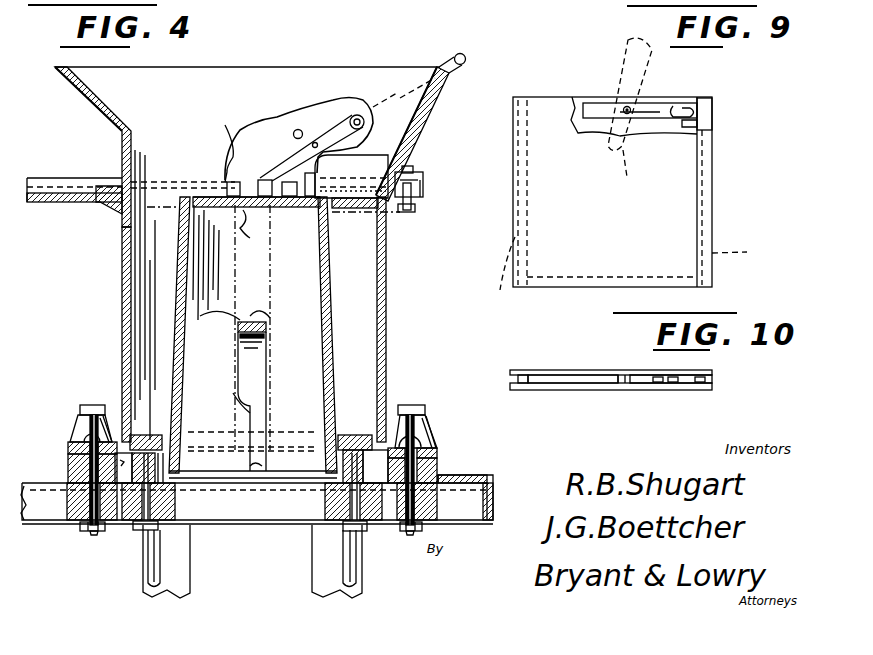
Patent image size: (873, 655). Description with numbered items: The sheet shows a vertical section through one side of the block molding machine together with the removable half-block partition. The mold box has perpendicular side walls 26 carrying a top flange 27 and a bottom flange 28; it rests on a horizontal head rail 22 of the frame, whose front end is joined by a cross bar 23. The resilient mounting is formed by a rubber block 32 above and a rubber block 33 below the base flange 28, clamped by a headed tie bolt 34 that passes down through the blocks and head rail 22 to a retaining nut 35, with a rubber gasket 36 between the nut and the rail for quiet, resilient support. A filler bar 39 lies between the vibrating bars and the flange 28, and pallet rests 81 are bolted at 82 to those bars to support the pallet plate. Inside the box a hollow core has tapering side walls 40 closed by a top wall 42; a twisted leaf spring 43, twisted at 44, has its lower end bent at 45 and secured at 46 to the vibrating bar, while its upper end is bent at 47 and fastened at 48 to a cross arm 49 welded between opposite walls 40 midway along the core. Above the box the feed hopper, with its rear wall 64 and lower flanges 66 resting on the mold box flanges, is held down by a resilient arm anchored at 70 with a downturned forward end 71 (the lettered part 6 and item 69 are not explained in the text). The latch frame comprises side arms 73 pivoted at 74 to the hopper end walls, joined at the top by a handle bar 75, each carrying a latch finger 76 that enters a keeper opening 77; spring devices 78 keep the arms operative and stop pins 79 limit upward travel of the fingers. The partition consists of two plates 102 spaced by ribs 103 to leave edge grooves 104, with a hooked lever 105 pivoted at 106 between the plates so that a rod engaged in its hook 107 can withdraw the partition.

In FIG. 4, the hopper side wall 6 is at (425, 112).
In FIG. 4, the head rail 22 is at (447, 513).
In FIG. 4, the cross bar 23 is at (485, 482).
In FIG. 4, the side wall 26 is at (121, 295).
In FIG. 4, the top flange 27 is at (103, 210).
In FIG. 4, the bottom flange 28 is at (77, 443).
In FIG. 4, the rubber block 32 is at (77, 425).
In FIG. 4, the rubber block 33 is at (68, 457).
In FIG. 4, the tie bolt 34 is at (90, 405).
In FIG. 4, the retaining nut 35 is at (279, 489).
In FIG. 4, the rubber gasket 36 is at (259, 522).
In FIG. 4, the filler bar 39 is at (115, 474).
In FIG. 4, the side wall 40 is at (182, 247).
In FIG. 4, the top wall 42 is at (200, 193).
In FIG. 4, the leaf spring 43 is at (247, 358).
In FIG. 4, the twist 44 is at (247, 412).
In FIG. 4, the bent lower end 45 is at (265, 400).
In FIG. 4, the securing point 46 is at (263, 478).
In FIG. 4, the bent upper end 47 is at (268, 353).
In FIG. 4, the securing point 48 is at (268, 312).
In FIG. 4, the cross arm 49 is at (233, 317).
In FIG. 4, the rear wall 64 is at (100, 112).
In FIG. 4, the flange 66 is at (100, 187).
In FIG. 4, the clamp screw 69 is at (418, 147).
In FIG. 4, the anchor 70 is at (403, 172).
In FIG. 4, the forward end 71 is at (423, 192).
In FIG. 4, the side arm 73 is at (309, 148).
In FIG. 4, the pivot 74 is at (357, 114).
In FIG. 4, the handle bar 75 is at (468, 61).
In FIG. 4, the latch finger 76 is at (225, 130).
In FIG. 4, the keeper opening 77 is at (252, 327).
In FIG. 4, the spring device 78 is at (375, 138).
In FIG. 4, the stop pin 79 is at (298, 129).
In FIG. 4, the pallet rest 81 is at (353, 435).
In FIG. 4, the bolt 82 is at (173, 513).
In FIG. 9, the plate 102 is at (680, 220).
In FIG. 10, the plate 102 is at (562, 370).
In FIG. 9, the rib 103 is at (628, 276).
In FIG. 10, the rib 103 is at (522, 370).
In FIG. 10, the edge groove 104 is at (710, 381).
In FIG. 9, the hooked lever 105 is at (648, 112).
In FIG. 10, the hooked lever 105 is at (600, 378).
In FIG. 9, the pivotal mounting 106 is at (625, 108).
In FIG. 10, the pivotal mounting 106 is at (623, 393).
In FIG. 9, the hook 107 is at (730, 73).
In FIG. 10, the hook 107 is at (677, 373).